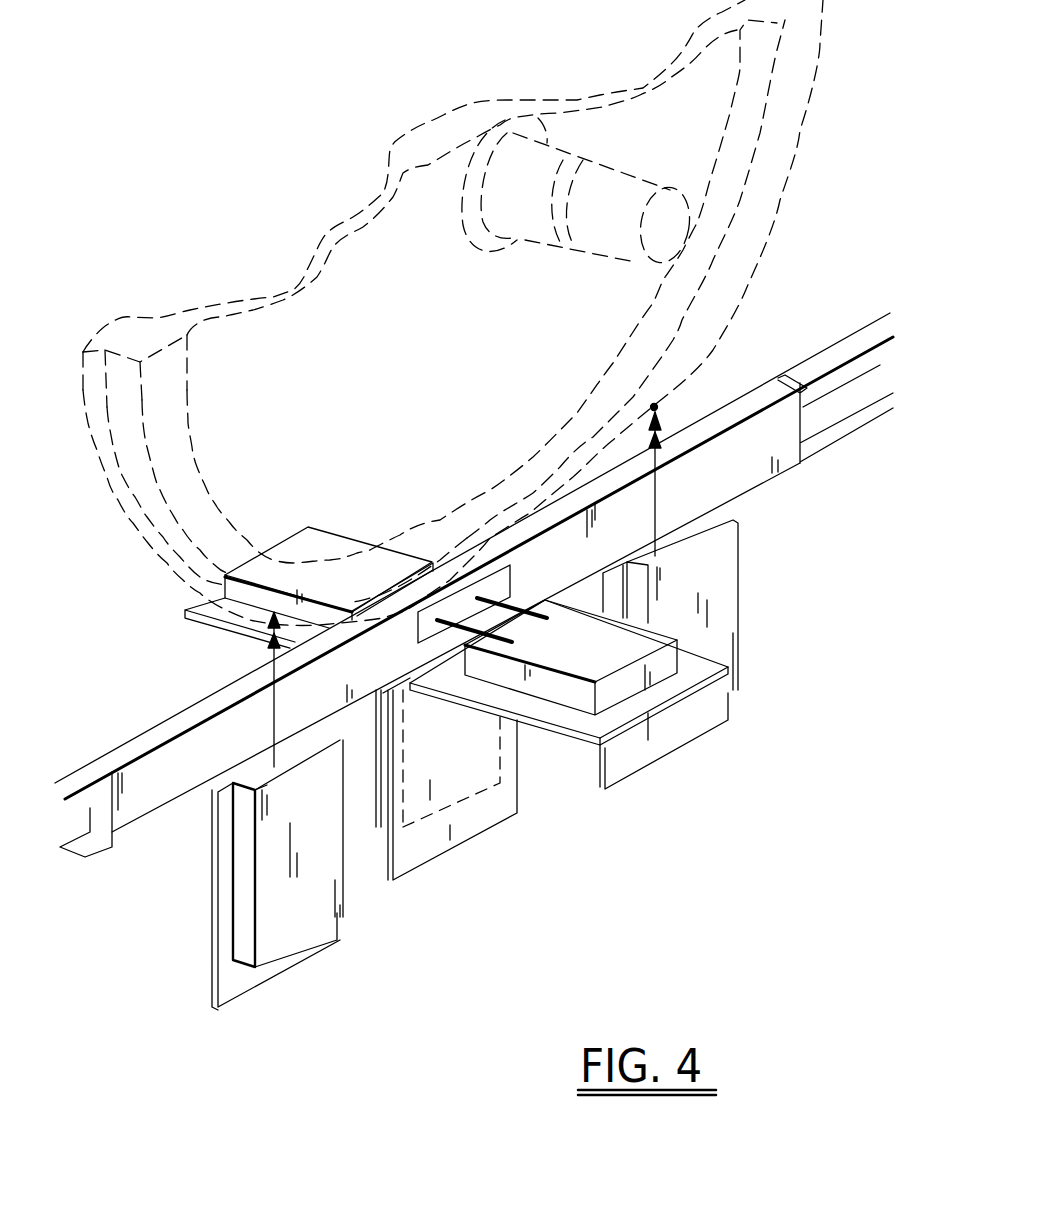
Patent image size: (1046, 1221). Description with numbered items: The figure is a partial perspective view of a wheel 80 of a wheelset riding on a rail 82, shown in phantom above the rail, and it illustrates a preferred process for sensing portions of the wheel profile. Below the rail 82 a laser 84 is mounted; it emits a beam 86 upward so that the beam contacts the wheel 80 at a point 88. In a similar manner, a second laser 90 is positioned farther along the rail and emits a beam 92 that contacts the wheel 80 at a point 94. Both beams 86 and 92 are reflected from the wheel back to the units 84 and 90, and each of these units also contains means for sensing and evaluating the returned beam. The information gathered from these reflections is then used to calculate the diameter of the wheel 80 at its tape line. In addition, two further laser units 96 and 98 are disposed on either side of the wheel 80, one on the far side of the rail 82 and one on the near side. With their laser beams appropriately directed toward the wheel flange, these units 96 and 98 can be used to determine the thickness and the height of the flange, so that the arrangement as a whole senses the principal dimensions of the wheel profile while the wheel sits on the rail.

The wheel 80 is at (115, 485).
The rail 82 is at (63, 782).
The laser 84 is at (232, 884).
The beam 86 is at (273, 673).
The point 88 is at (270, 630).
The laser 90 is at (737, 600).
The beam 92 is at (656, 513).
The point 94 is at (656, 407).
The laser unit 96 is at (327, 544).
The laser unit 98 is at (552, 688).